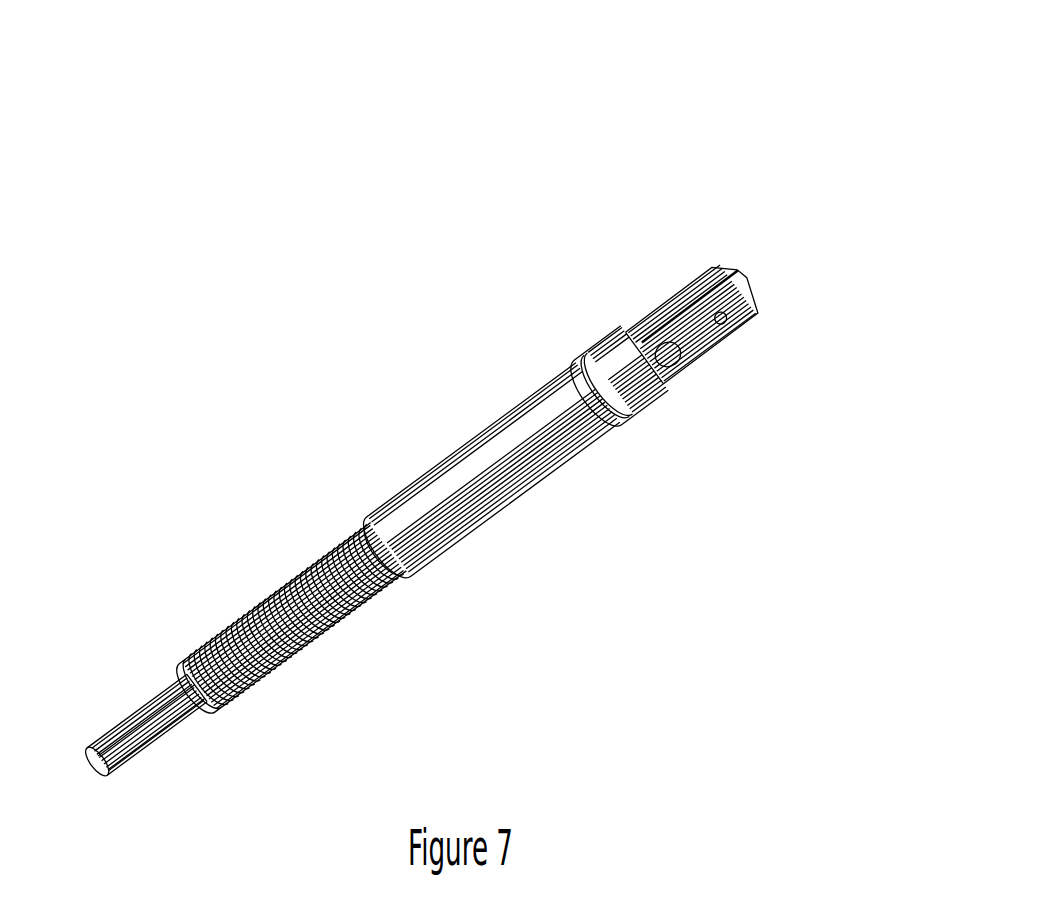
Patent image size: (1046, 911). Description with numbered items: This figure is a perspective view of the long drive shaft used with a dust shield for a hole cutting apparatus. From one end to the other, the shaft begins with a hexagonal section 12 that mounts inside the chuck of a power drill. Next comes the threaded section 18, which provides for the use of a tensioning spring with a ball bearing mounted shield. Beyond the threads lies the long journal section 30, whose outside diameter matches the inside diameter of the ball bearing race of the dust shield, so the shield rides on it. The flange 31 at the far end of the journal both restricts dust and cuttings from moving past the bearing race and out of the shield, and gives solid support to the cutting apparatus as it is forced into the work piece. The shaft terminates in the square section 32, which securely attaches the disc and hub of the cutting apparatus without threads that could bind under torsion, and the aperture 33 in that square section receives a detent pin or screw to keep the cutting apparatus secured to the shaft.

The hexagonal section 12 is at (112, 712).
The threaded section 18 is at (345, 527).
The long journal section 30 is at (495, 420).
The flange 31 is at (590, 330).
The square section 32 is at (660, 300).
The aperture 33 is at (682, 370).